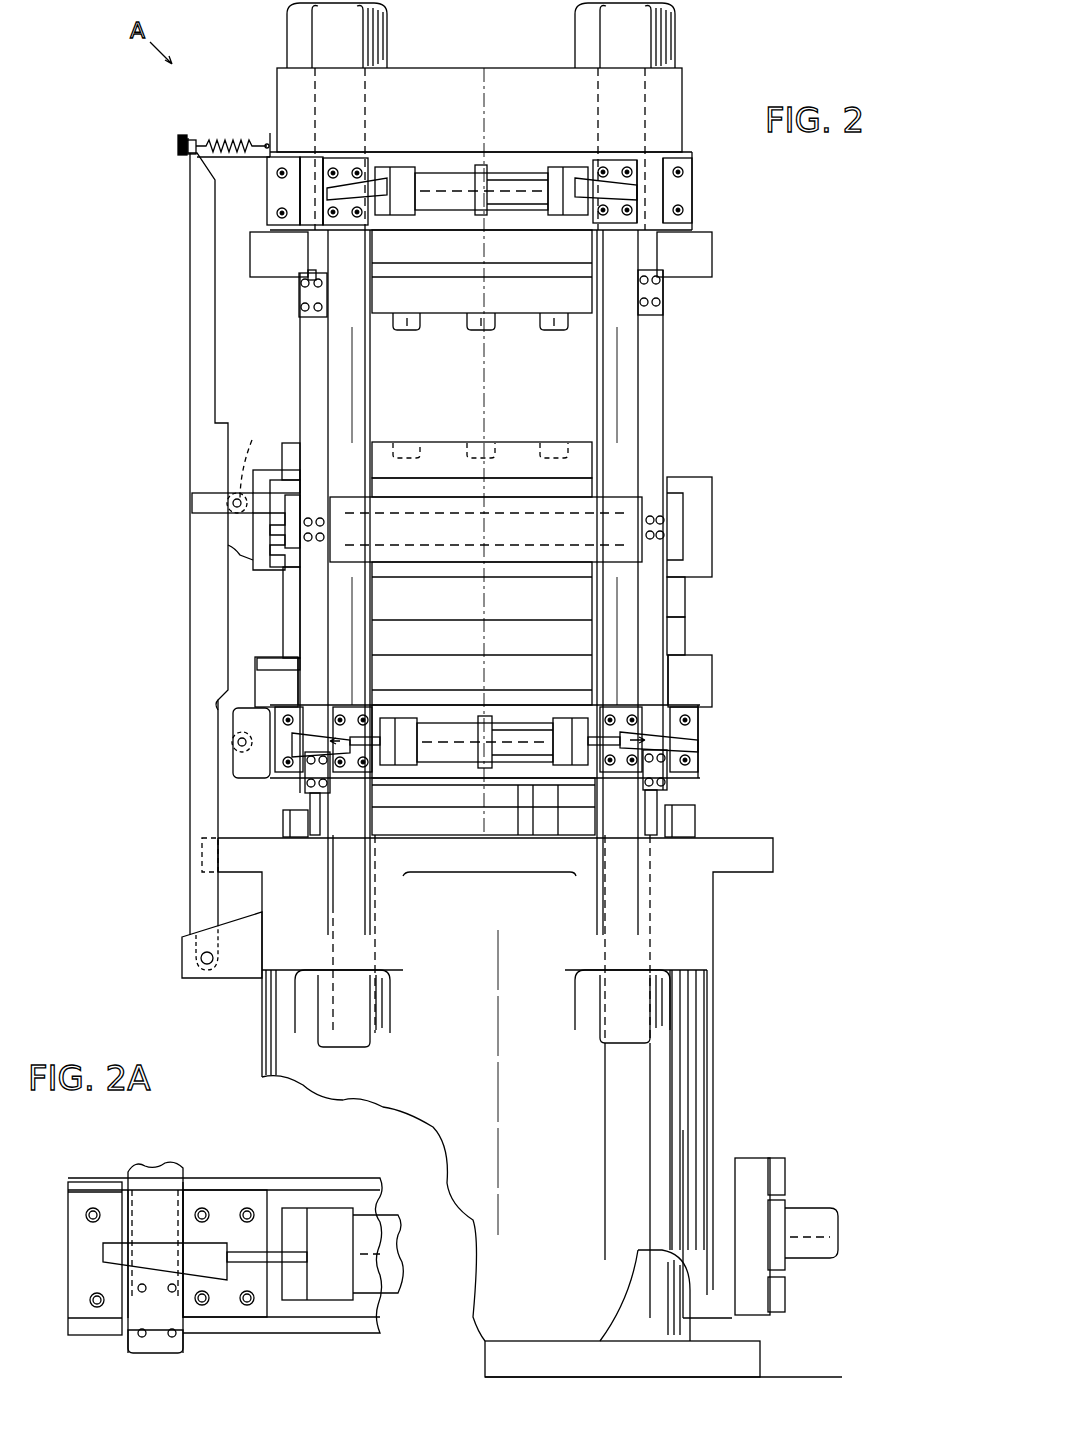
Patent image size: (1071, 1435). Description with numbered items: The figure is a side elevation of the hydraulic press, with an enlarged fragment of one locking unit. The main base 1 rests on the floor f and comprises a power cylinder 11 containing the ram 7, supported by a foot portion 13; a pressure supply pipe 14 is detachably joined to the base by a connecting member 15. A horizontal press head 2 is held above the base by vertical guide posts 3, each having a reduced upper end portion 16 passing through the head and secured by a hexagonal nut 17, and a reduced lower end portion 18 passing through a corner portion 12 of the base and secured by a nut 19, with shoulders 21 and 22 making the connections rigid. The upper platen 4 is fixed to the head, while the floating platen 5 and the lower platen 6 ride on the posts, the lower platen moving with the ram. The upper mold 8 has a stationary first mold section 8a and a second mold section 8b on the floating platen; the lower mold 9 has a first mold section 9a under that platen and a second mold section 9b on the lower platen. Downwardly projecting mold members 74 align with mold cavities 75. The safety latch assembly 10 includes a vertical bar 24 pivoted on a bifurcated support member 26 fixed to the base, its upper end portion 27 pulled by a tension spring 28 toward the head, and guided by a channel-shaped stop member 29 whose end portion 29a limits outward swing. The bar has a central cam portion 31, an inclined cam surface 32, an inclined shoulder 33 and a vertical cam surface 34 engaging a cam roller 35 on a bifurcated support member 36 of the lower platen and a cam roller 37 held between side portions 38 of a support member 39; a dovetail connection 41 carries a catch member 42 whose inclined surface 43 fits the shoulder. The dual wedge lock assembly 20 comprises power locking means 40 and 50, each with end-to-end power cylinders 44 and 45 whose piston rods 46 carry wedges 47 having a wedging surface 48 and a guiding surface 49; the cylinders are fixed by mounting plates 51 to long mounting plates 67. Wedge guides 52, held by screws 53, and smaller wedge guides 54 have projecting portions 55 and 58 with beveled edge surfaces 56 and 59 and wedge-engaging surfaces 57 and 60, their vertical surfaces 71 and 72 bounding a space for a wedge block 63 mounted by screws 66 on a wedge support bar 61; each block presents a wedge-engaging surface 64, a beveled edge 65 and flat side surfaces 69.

In FIG. 2, the main base 1 is at (720, 1082).
In FIG. 2, the press head 2 is at (490, 80).
In FIG. 2, the guide posts 3 is at (364, 386).
In FIG. 2, the upper platen 4 is at (712, 250).
In FIG. 2, the floating platen 5 is at (706, 520).
In FIG. 2, the lower platen 6 is at (517, 688).
In FIG. 2, the ram 7 is at (508, 792).
In FIG. 2, the upper mold 8 is at (709, 411).
In FIG. 2, the first mold section 8a is at (503, 322).
In FIG. 2, the second mold section 8b is at (516, 446).
In FIG. 2, the lower mold 9 is at (702, 598).
In FIG. 2, the first mold section 9a is at (686, 602).
In FIG. 2, the second mold section 9b is at (686, 630).
In FIG. 2, the safety latch assembly 10 is at (184, 574).
In FIG. 2, the power cylinder 11 is at (697, 1036).
In FIG. 2, the corner portion 12 is at (275, 893).
In FIG. 2, the foot portion 13 is at (708, 1341).
In FIG. 2, the pressure supply pipe 14 is at (818, 1218).
In FIG. 2, the connecting member 15 is at (755, 1310).
In FIG. 2, the upper end portion 16 is at (364, 118).
In FIG. 2, the hexagonal nut 17 is at (290, 40).
In FIG. 2, the lower end portion 18 is at (375, 912).
In FIG. 2, the hexagonal nut 19 is at (390, 976).
In FIG. 2, the dual wedge lock assembly 20 is at (282, 800).
In FIG. 2, the shoulder 21 is at (312, 228).
In FIG. 2, the shoulder 22 is at (334, 840).
In FIG. 2, the vertical bar 24 is at (190, 366).
In FIG. 2, the bifurcated support member 26 is at (232, 970).
In FIG. 2, the upper end portion 27 is at (190, 156).
In FIG. 2, the tension spring 28 is at (243, 160).
In FIG. 2, the stop member 29 is at (250, 140).
In FIG. 2, the end portion 29a is at (182, 134).
In FIG. 2, the central cam portion 31 is at (222, 628).
In FIG. 2, the inclined cam surface 32 is at (218, 702).
In FIG. 2, the inclined shoulder 33 is at (222, 426).
In FIG. 2, the vertical cam surface 34 is at (230, 584).
In FIG. 2, the cam roller 35 is at (230, 742).
In FIG. 2, the bifurcated support member 36 is at (250, 772).
In FIG. 2, the cam roller 37 is at (242, 470).
In FIG. 2, the side portions 38 is at (196, 496).
In FIG. 2, the support member 39 is at (276, 490).
In FIG. 2, the first power locking means 40 is at (714, 170).
In FIG. 2, the dovetail connection 41 is at (300, 552).
In FIG. 2, the catch member 42 is at (232, 536).
In FIG. 2, the inclined surface 43 is at (242, 554).
In FIG. 2, the power cylinder 44 is at (445, 172).
In FIG. 2A, the power cylinder 44 is at (393, 1303).
In FIG. 2, the power cylinder 45 is at (515, 176).
In FIG. 2, the piston rods 46 is at (400, 216).
In FIG. 2A, the piston rods 46 is at (323, 1252).
In FIG. 2, the wedge 47 is at (576, 216).
In FIG. 2A, the wedge 47 is at (103, 1244).
In FIG. 2, the wedging surface 48 is at (336, 168).
In FIG. 2A, the wedging surface 48 is at (117, 1268).
In FIG. 2, the guiding surface 49 is at (618, 216).
In FIG. 2A, the guiding surface 49 is at (163, 1240).
In FIG. 2, the second power locking means 50 is at (722, 745).
In FIG. 2A, the second power locking means 50 is at (200, 1133).
In FIG. 2, the mounting plates 51 is at (390, 176).
In FIG. 2A, the mounting plates 51 is at (297, 1293).
In FIG. 2, the wedge guide 52 is at (356, 170).
In FIG. 2A, the wedge guide 52 is at (230, 1200).
In FIG. 2A, the screws 53 is at (247, 1305).
In FIG. 2, the wedge guide 54 is at (682, 172).
In FIG. 2A, the wedge guide 54 is at (78, 1200).
In FIG. 2, the projecting portion 55 is at (346, 226).
In FIG. 2A, the projecting portion 55 is at (260, 1203).
In FIG. 2, the beveled edge surface 56 is at (660, 226).
In FIG. 2A, the beveled edge surface 56 is at (188, 1187).
In FIG. 2, the wedge-engaging surface 57 is at (620, 192).
In FIG. 2A, the wedge-engaging surface 57 is at (206, 1244).
In FIG. 2, the projecting portion 58 is at (690, 210).
In FIG. 2A, the projecting portion 58 is at (70, 1197).
In FIG. 2, the beveled edge surface 59 is at (310, 230).
In FIG. 2A, the beveled edge surface 59 is at (120, 1187).
In FIG. 2, the wedge-engaging surface 60 is at (267, 194).
In FIG. 2A, the wedge-engaging surface 60 is at (73, 1222).
In FIG. 2, the wedge support bars 61 is at (310, 376).
In FIG. 2A, the wedge support bars 61 is at (153, 1167).
In FIG. 2, the wedge block 63 is at (300, 286).
In FIG. 2A, the wedge block 63 is at (160, 1343).
In FIG. 2, the wedge-engaging surface 64 is at (660, 302).
In FIG. 2A, the wedge-engaging surface 64 is at (163, 1260).
In FIG. 2, the beveled edge 65 is at (300, 270).
In FIG. 2A, the beveled edge 65 is at (130, 1353).
In FIG. 2, the screws 66 is at (312, 308).
In FIG. 2A, the screws 66 is at (140, 1333).
In FIG. 2, the mounting plates 67 is at (484, 162).
In FIG. 2A, the mounting plates 67 is at (303, 1193).
In FIG. 2, the side surfaces 69 is at (327, 304).
In FIG. 2A, the side surfaces 69 is at (187, 1323).
In FIG. 2, the vertical surface 71 is at (322, 162).
In FIG. 2A, the vertical surface 71 is at (177, 1167).
In FIG. 2, the vertical surface 72 is at (300, 162).
In FIG. 2A, the vertical surface 72 is at (130, 1207).
In FIG. 2, the mold members 74 is at (414, 328).
In FIG. 2, the mold cavities 75 is at (404, 455).
In FIG. 2, the floor f is at (812, 1377).